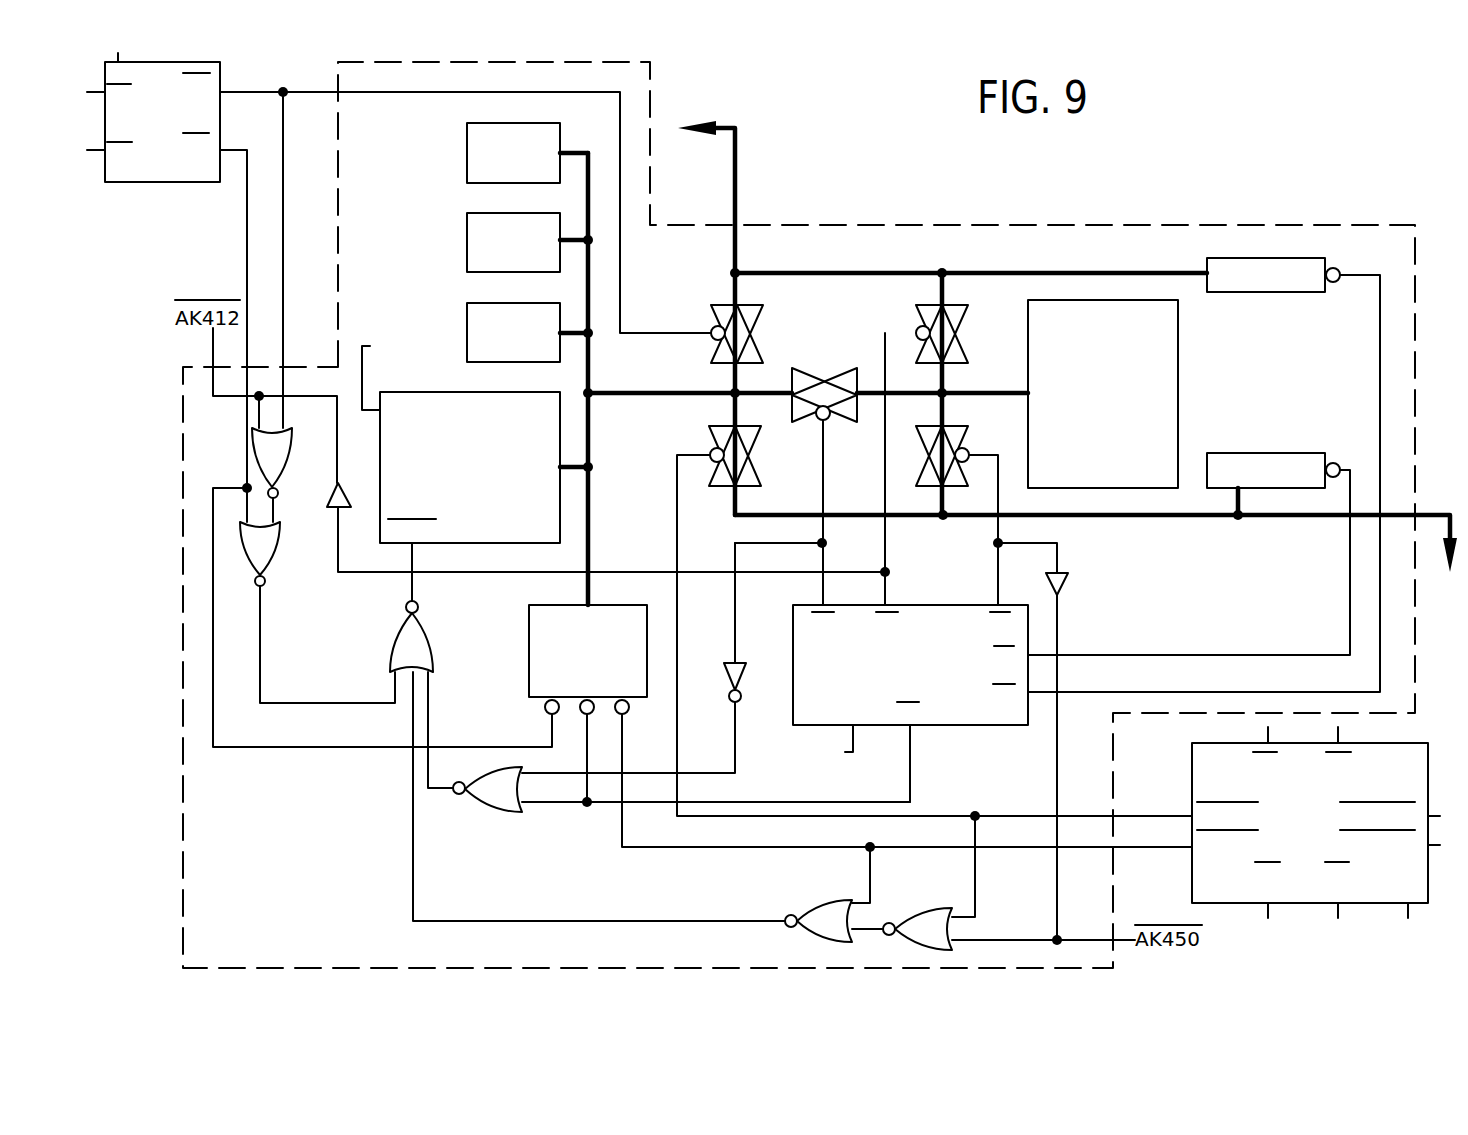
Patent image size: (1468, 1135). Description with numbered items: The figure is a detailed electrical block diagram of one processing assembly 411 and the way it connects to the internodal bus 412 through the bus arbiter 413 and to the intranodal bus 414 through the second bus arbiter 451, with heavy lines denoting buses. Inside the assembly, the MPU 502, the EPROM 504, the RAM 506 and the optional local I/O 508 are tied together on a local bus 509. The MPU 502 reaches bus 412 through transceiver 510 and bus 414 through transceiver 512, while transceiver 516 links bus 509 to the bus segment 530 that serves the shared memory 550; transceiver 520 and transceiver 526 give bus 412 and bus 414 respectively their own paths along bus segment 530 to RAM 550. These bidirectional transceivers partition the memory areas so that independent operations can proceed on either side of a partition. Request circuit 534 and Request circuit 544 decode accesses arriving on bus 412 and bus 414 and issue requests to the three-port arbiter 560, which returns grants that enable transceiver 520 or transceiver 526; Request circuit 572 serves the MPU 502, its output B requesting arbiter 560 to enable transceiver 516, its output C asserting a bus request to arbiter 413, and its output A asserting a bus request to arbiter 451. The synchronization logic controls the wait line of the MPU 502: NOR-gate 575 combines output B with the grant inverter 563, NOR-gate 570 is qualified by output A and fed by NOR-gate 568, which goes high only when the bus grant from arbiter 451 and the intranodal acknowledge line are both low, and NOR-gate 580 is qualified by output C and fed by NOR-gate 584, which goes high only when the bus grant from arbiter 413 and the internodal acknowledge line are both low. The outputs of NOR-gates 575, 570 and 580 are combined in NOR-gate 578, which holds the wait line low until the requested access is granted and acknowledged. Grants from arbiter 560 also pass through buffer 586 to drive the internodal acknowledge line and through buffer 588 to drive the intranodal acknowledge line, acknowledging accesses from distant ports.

The processing assembly 411 is at (468, 63).
The internodal bus 412 is at (735, 128).
The bus 412 arbiter 413 is at (210, 62).
The intranodal bus 414 is at (1140, 520).
The bus 450 arbiter 451 is at (1192, 749).
The MPU 502 is at (440, 380).
The erasable programmable read-only memory (EPROM) 504 is at (467, 305).
The random-access memory (RAM) 506 is at (467, 217).
The local input-output equipment (I/O) 508 is at (467, 128).
The local bus 509 is at (686, 393).
The transceiver 510 is at (761, 305).
The transceiver 512 is at (716, 422).
The transceiver 516 is at (800, 369).
The transceiver 520 is at (924, 304).
The transceiver 526 is at (963, 424).
The bus segment 530 is at (946, 393).
The Request circuit 534 is at (1283, 259).
The Request circuit 544 is at (1260, 453).
The shared memory (RAM) 550 is at (1180, 385).
The arbiter 560 is at (960, 727).
The inverter 563 is at (730, 661).
The NOR-gate 568 is at (940, 907).
The NOR-gate 570 is at (832, 899).
The Request circuit 572 is at (535, 604).
The NOR-gate 575 is at (503, 812).
The NOR-gate 578 is at (398, 625).
The NOR-gate 580 is at (267, 575).
The NOR-gate 584 is at (257, 472).
The buffer 586 is at (333, 508).
The buffer 588 is at (1067, 573).